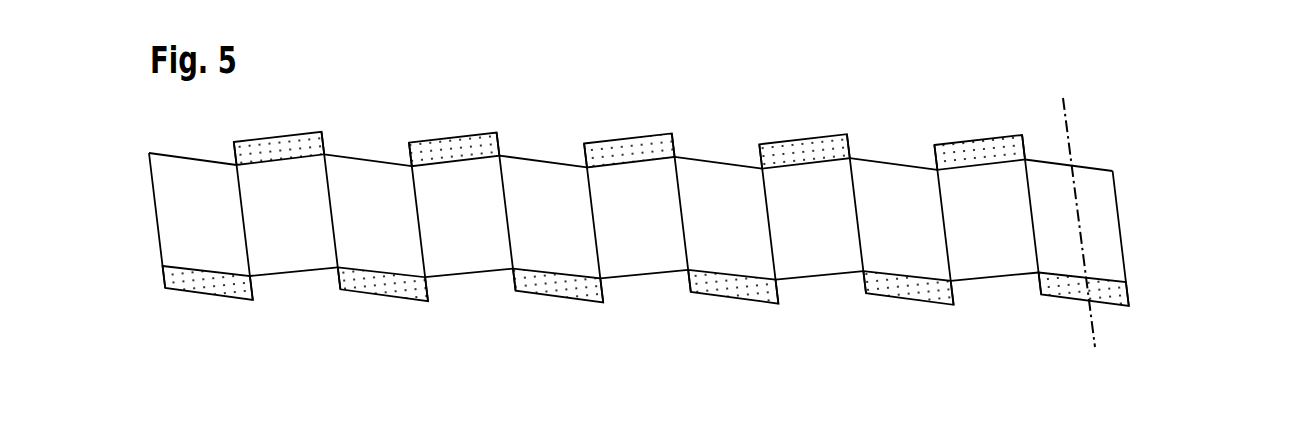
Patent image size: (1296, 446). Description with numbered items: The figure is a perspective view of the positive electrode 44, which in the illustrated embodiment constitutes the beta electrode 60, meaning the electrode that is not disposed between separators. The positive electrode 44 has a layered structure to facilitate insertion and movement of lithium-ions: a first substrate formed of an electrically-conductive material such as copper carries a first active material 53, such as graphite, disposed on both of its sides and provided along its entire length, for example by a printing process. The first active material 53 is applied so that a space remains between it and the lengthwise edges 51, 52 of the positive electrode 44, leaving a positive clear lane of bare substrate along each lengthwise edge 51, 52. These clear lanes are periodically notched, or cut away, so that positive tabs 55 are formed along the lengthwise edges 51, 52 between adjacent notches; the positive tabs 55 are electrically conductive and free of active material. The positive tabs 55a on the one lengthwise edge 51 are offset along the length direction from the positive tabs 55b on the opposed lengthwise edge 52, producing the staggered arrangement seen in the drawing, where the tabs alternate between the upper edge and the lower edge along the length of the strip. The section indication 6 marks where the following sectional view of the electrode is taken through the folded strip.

The filter element 44 is at (706, 219).
The pleated filter bellows 60 is at (706, 219).
The first edge region of filter medium 51 is at (618, 146).
The second edge region of filter medium 52 is at (538, 295).
The pleat wall section 53 is at (293, 248).
The adhesive strips 55 is at (646, 219).
The first adhesive strip 55a is at (629, 124).
The second adhesive strip 55b is at (646, 313).
The section line VI-VI 6 is at (1068, 330).